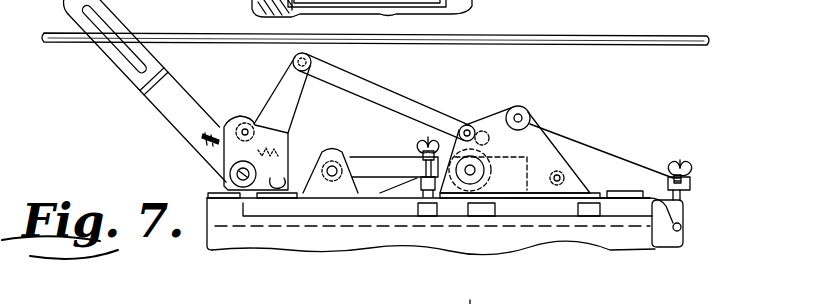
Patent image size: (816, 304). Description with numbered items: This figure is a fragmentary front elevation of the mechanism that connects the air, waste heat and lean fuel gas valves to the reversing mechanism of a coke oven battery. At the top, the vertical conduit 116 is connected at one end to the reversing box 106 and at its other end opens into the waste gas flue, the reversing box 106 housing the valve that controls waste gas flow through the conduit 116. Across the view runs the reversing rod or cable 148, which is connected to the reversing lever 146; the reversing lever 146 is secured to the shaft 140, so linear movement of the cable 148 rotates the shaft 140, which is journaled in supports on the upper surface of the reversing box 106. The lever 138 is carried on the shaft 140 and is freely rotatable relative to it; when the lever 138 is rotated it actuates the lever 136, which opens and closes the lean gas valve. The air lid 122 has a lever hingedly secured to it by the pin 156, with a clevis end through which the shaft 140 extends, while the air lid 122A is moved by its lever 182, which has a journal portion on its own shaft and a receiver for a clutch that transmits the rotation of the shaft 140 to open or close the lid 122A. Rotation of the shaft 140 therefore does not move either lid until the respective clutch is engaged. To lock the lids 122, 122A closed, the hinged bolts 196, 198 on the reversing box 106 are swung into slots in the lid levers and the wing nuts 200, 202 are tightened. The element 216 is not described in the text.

The reversing box 106 is at (660, 211).
The vertical conduit 116 is at (386, 8).
The air lid 122 is at (382, 199).
The air lid 122A is at (603, 199).
The lever 136 is at (411, 101).
The lever 138 is at (273, 93).
The shaft 140 is at (228, 177).
The reversing lever 146 is at (103, 11).
The reversing rod or cable 148 is at (587, 45).
The pin 156 is at (334, 164).
The lever 182 is at (597, 165).
The bolt 196 is at (428, 139).
The bolt 198 is at (678, 163).
The wing nut 200 is at (417, 147).
The wing nut 202 is at (690, 162).
The support 216 is at (466, 299).